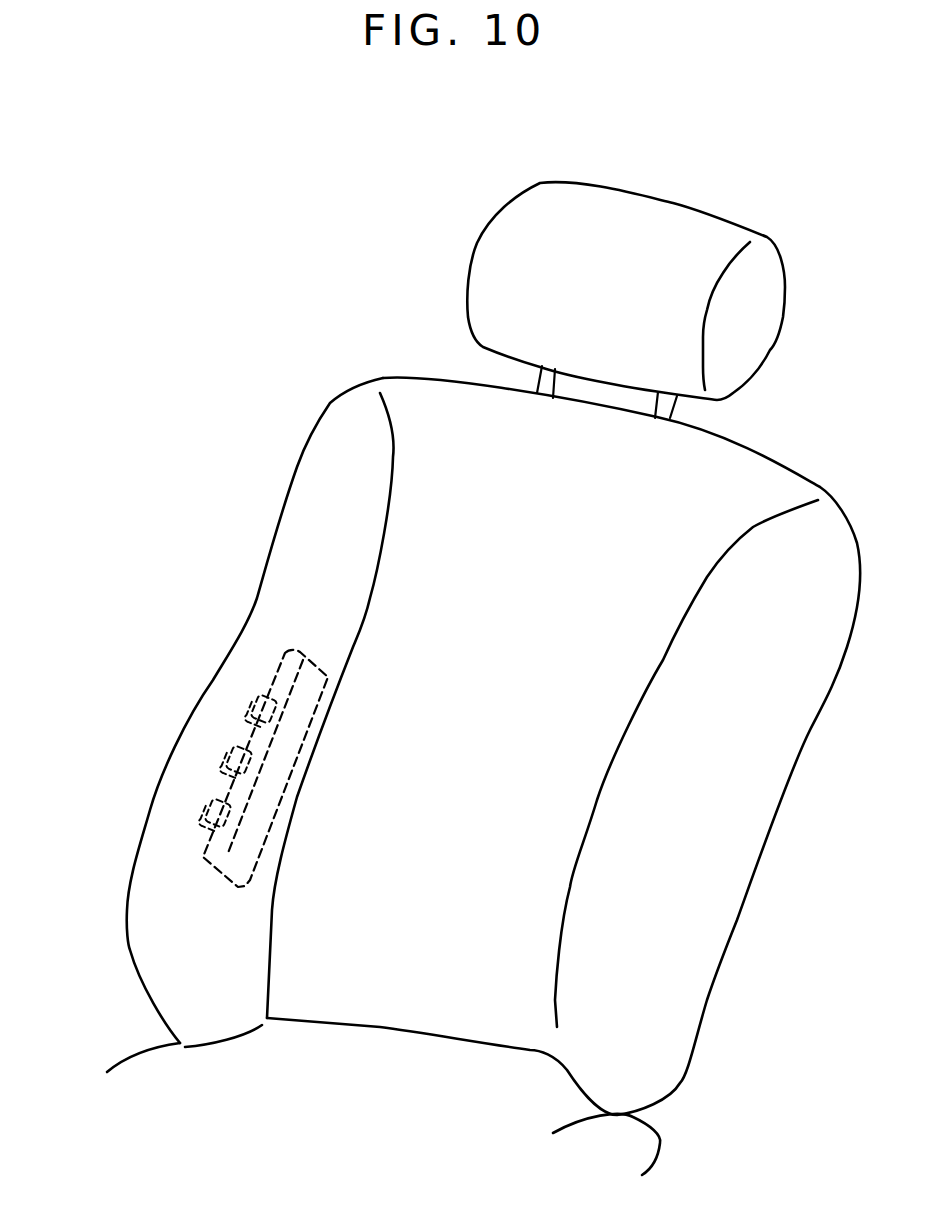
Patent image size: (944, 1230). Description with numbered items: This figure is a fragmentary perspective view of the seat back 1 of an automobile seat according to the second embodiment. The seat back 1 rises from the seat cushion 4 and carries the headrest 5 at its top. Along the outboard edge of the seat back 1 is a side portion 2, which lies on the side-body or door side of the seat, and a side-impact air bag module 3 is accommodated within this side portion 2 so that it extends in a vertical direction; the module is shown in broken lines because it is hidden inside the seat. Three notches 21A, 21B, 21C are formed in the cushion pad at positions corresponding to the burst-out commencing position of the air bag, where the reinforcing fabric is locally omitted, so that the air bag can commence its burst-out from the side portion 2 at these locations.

The seat back 1 is at (422, 443).
The side portion 2 is at (320, 490).
The side-impact air bag module 3 is at (290, 667).
The seat cushion 4 is at (207, 1093).
The headrest 5 is at (492, 257).
The notch 21A is at (265, 692).
The notch 21B is at (242, 743).
The notch 21C is at (210, 805).